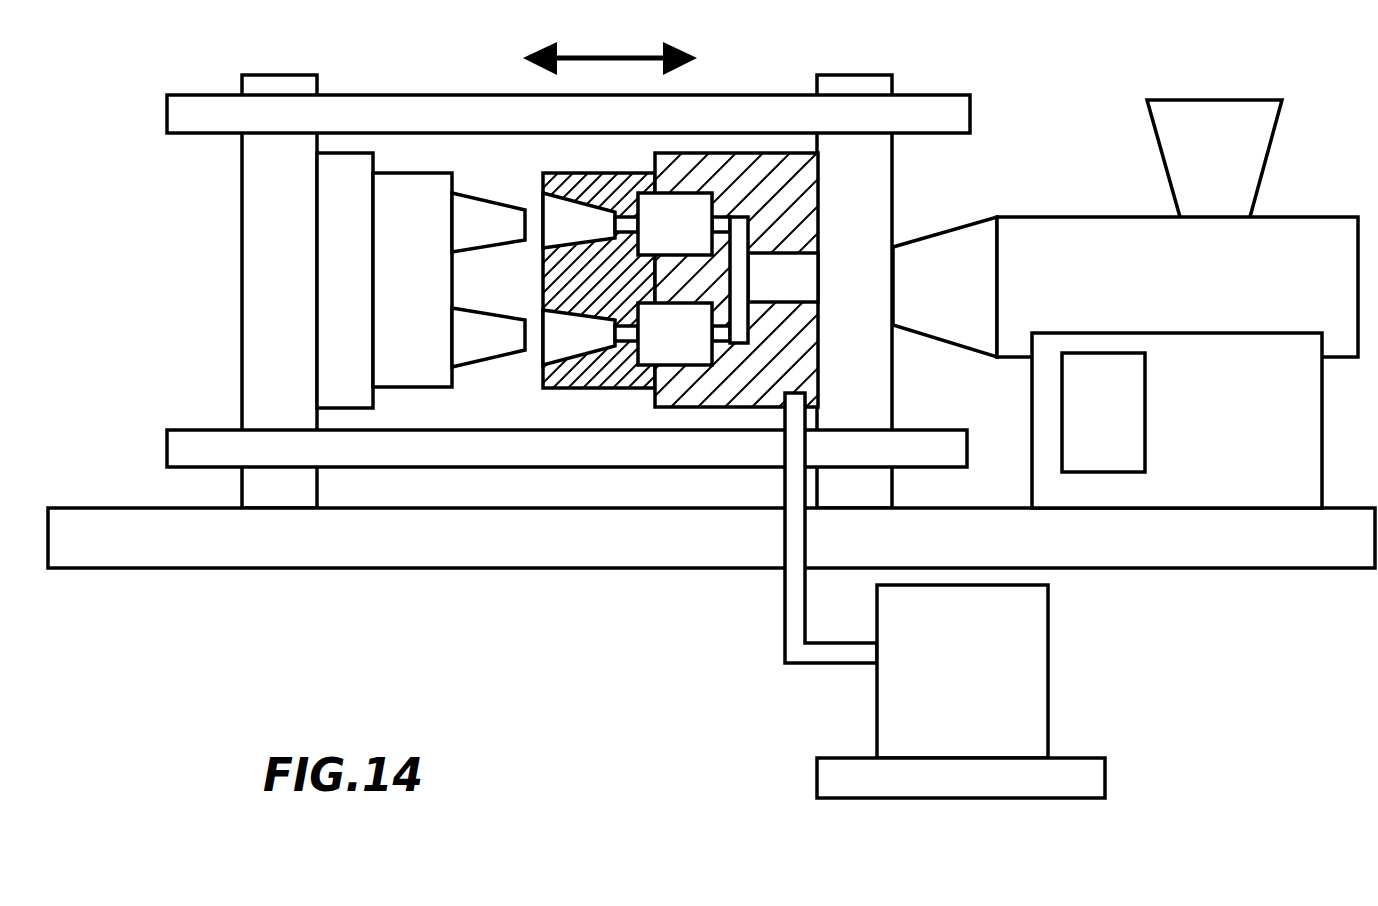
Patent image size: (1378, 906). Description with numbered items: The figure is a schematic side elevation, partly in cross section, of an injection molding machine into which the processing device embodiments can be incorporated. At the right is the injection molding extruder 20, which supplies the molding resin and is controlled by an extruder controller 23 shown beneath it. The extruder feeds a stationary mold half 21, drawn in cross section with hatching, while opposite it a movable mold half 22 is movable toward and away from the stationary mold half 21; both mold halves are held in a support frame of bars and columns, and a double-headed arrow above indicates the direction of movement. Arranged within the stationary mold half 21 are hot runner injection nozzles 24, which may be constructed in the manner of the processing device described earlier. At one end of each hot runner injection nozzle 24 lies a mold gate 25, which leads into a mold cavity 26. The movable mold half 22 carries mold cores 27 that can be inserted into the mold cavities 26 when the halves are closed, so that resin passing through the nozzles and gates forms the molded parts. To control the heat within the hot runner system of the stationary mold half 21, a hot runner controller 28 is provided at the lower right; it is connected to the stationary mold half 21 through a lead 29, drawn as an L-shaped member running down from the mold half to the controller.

The injection molding extruder 20 is at (1115, 282).
The stationary mold half 21 is at (755, 193).
The movable mold half 22 is at (413, 203).
The extruder controller 23 is at (1125, 452).
The hot runner injection nozzle 24 is at (698, 345).
The mold gate 25 is at (627, 330).
The mold cavity 26 is at (593, 335).
The mold core 27 is at (488, 335).
The hot runner controller 28 is at (993, 675).
The lead 29 is at (802, 622).